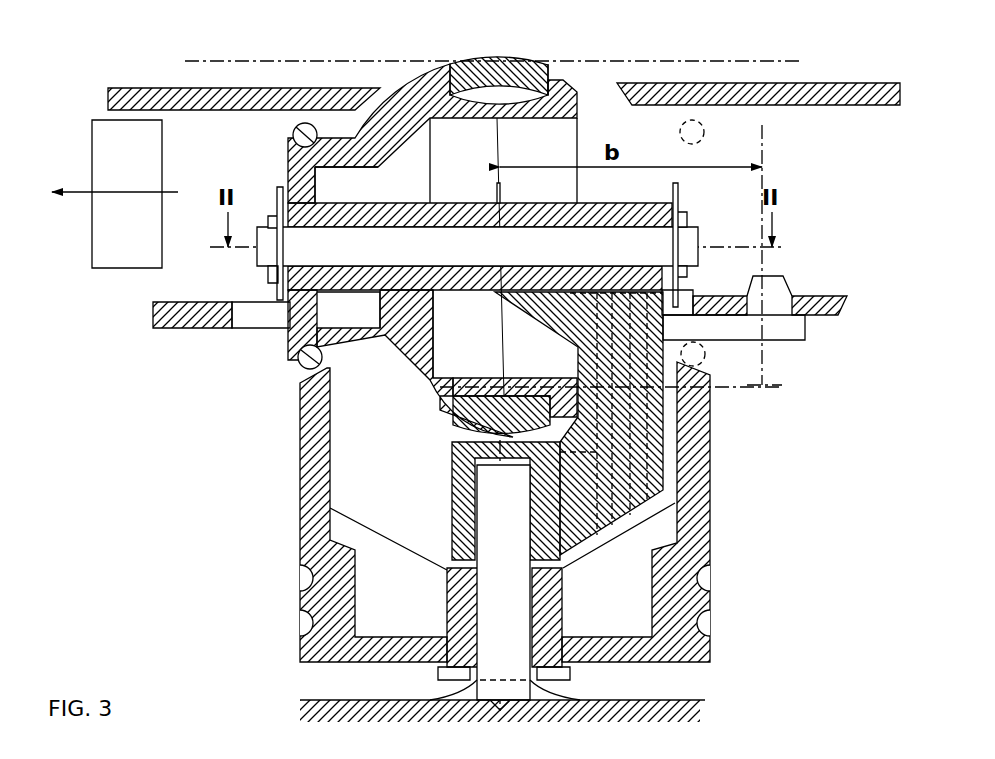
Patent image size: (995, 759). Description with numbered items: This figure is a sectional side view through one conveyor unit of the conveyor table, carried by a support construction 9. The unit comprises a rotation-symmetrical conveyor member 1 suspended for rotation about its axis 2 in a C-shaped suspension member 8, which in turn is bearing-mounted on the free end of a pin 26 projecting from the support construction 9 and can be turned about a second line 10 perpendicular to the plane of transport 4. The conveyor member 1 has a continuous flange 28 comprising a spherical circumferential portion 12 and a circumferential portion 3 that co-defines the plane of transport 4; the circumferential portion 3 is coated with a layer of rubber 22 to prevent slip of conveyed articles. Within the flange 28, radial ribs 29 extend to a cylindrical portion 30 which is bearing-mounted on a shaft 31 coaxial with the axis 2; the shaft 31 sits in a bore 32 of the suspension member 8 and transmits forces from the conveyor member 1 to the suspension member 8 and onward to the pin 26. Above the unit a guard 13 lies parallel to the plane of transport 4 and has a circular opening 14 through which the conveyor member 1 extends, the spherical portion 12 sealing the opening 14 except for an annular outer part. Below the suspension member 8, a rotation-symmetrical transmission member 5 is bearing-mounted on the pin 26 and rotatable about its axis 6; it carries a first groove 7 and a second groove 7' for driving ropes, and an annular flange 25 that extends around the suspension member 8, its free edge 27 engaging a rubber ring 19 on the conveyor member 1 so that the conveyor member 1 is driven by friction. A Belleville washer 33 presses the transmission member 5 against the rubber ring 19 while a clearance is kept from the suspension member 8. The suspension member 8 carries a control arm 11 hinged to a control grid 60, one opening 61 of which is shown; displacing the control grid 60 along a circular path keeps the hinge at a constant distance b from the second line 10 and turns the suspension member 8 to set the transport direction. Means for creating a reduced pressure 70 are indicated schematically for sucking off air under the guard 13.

The conveyor member 1 is at (290, 338).
The axis 2 is at (698, 245).
The circumferential portion 3 is at (473, 62).
The plane of transport 4 is at (243, 60).
The transmission member 5 is at (710, 440).
The axis 6 is at (500, 508).
The groove 7 is at (473, 571).
The second groove 7' is at (473, 619).
The suspension member 8 is at (640, 410).
The support construction 9 is at (707, 702).
The second line 10 is at (500, 318).
The control arm 11 is at (748, 338).
The circumferential portion 12 is at (413, 90).
The guard 13 is at (656, 82).
The opening 14 is at (362, 92).
The rubber ring 19 is at (325, 366).
The layer of rubber 22 is at (548, 82).
The annular flange 25 is at (710, 498).
The pin 26 is at (520, 607).
The free edge 27 is at (300, 377).
The continuous flange 28 is at (528, 375).
The radial ribs 29 is at (494, 150).
The cylindrical portion 30 is at (384, 210).
The shaft 31 is at (552, 237).
The bore 32 is at (629, 224).
The Belleville washer 33 is at (573, 692).
The control grid 60 is at (825, 296).
The opening 61 is at (692, 296).
The means for creating a reduced pressure 70 is at (128, 256).